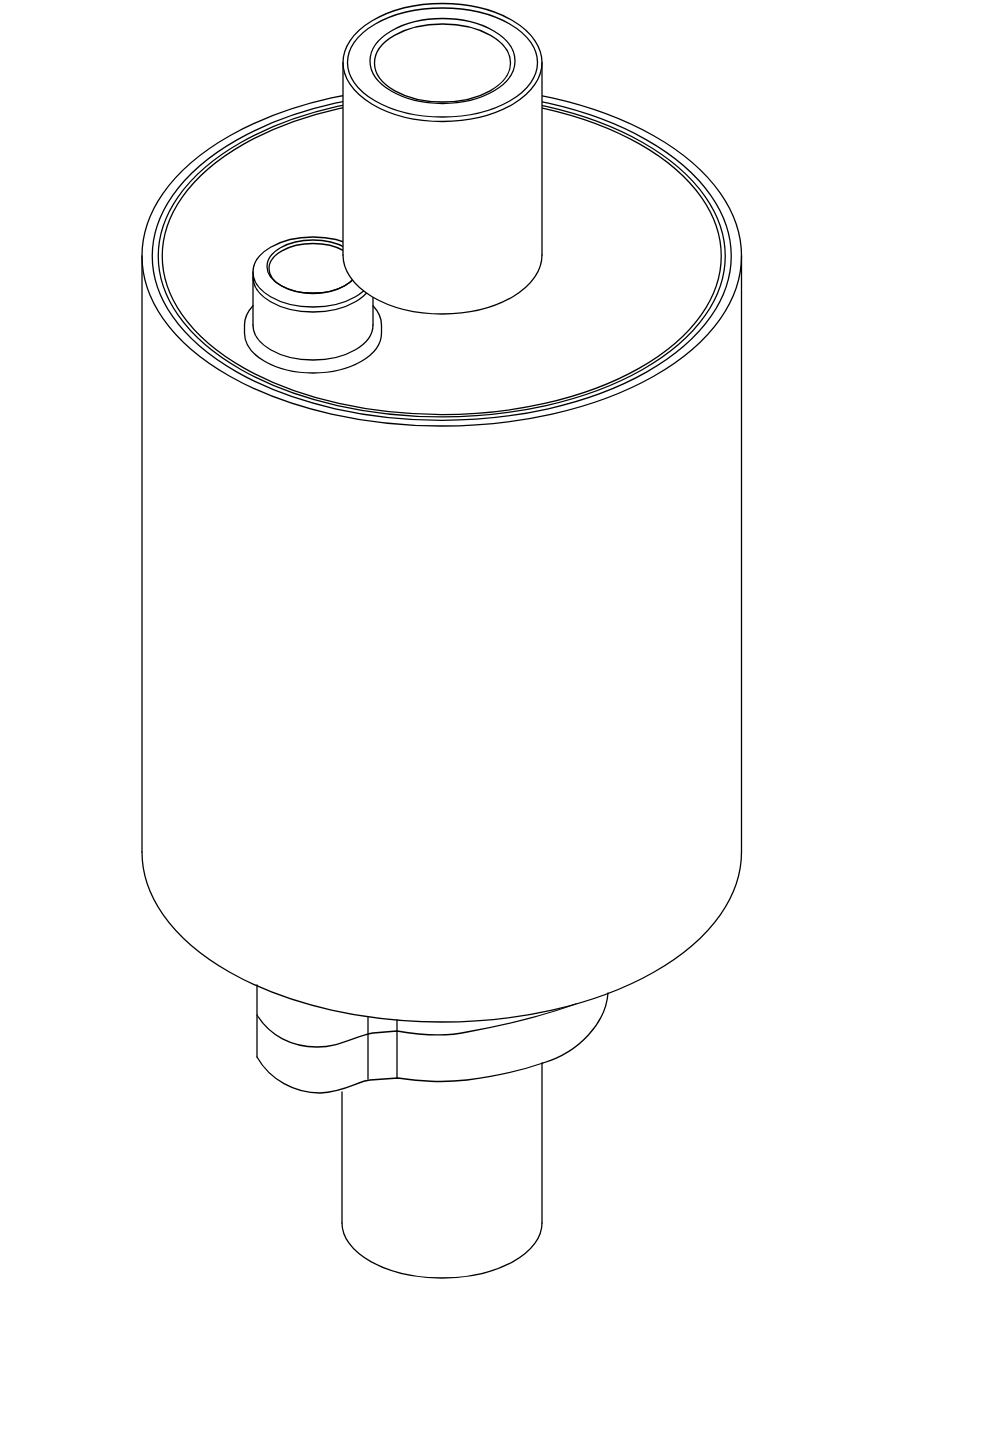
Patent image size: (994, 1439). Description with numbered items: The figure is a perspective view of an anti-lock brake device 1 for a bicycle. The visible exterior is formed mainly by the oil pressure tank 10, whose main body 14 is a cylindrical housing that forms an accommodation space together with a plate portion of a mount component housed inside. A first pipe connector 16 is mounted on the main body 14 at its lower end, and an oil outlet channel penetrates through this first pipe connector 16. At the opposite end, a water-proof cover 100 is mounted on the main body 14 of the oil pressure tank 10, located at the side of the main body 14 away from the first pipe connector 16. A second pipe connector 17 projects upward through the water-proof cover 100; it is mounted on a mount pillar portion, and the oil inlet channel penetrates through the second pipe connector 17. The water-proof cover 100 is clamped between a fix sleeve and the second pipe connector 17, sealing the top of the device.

The anti-lock brake device 1 is at (98, 42).
The oil pressure tank 10 is at (127, 458).
The main body 14 is at (707, 573).
The water-proof cover 100 is at (677, 242).
The second pipe connector 17 is at (527, 132).
The first pipe connector 16 is at (566, 1033).